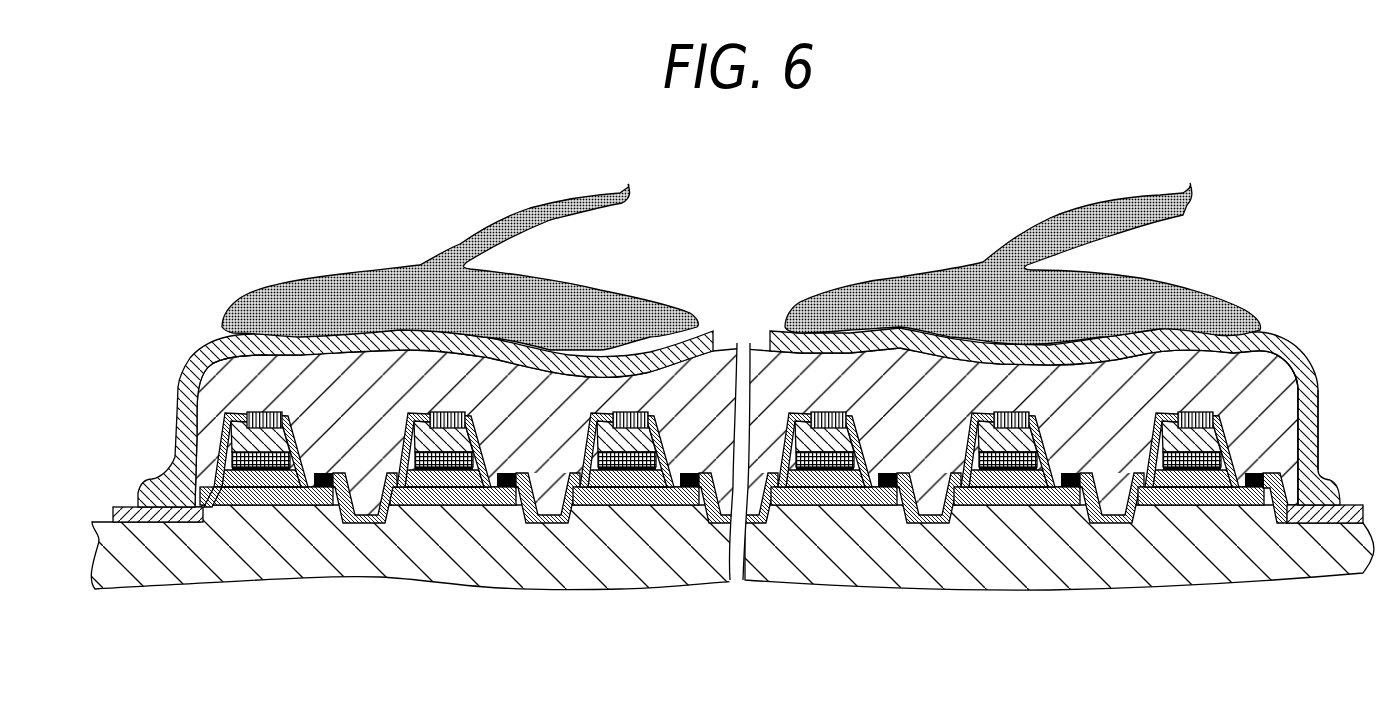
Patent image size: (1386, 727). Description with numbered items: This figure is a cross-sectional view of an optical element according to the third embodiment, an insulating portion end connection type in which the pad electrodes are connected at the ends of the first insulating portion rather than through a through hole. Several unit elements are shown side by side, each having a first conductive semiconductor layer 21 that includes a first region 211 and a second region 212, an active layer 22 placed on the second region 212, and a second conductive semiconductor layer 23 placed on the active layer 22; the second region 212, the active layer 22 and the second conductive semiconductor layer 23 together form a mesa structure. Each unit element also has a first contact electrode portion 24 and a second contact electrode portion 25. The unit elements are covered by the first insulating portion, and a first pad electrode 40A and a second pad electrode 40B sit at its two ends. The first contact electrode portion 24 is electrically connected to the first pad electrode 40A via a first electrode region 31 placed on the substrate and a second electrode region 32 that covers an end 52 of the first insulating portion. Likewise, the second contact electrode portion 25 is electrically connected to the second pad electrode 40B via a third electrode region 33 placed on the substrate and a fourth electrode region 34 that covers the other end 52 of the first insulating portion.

The first conductive semiconductor layer 21 is at (194, 458).
The first region 211 is at (233, 475).
The second region 212 is at (237, 457).
The active layer 22 is at (237, 430).
The second conductive semiconductor layer 23 is at (225, 413).
The first contact electrode portion 24 is at (1252, 487).
The second contact electrode portion 25 is at (249, 478).
The first electrode region 31 is at (1323, 523).
The second electrode region 32 is at (1303, 407).
The third electrode region 33 is at (138, 522).
The fourth electrode region 34 is at (152, 488).
The first pad electrode 40A is at (1265, 332).
The second pad electrode 40B is at (223, 347).
The end 52 is at (228, 381).